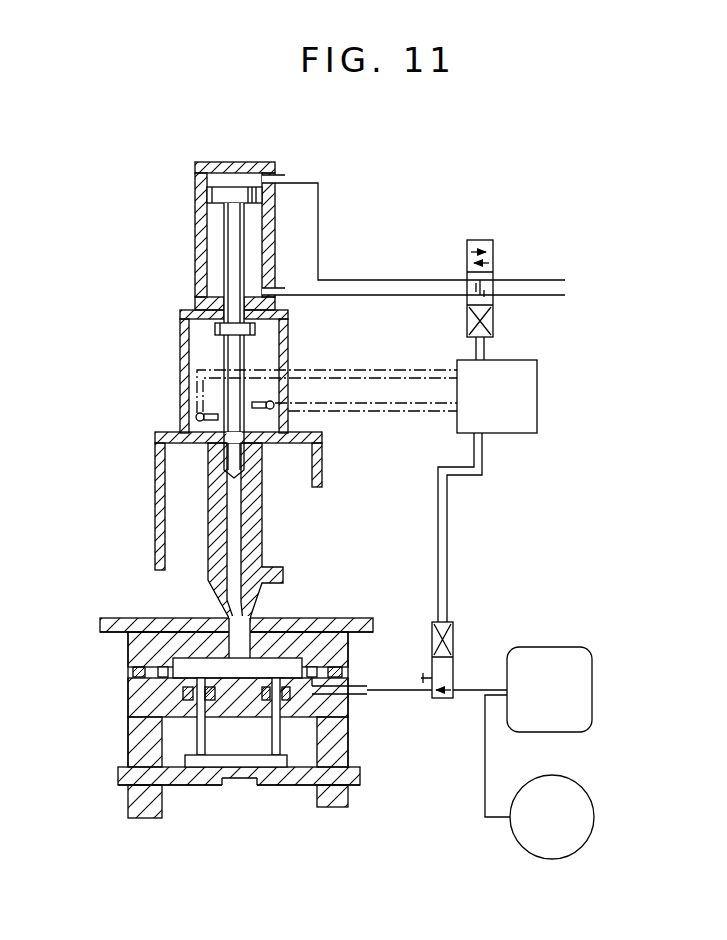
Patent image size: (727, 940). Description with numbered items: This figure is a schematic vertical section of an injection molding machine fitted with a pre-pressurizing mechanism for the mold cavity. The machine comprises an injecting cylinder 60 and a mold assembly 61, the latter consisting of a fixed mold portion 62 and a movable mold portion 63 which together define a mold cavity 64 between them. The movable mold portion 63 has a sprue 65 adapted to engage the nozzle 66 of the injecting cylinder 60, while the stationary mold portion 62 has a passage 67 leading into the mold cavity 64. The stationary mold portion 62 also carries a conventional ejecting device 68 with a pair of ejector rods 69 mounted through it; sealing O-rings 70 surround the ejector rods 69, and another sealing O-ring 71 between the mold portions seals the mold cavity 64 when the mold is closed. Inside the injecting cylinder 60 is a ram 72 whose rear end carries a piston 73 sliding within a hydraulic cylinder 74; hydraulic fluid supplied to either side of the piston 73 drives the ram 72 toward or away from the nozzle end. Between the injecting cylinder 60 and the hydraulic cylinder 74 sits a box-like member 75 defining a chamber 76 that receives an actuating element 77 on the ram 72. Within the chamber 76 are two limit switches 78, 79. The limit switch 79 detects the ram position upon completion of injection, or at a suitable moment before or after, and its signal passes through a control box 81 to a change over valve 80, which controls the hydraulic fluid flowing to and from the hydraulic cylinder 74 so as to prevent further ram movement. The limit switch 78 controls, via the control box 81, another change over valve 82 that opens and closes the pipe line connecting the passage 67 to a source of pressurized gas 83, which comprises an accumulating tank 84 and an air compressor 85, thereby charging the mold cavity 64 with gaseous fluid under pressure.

The injecting cylinder 60 is at (209, 470).
The mold assembly 61 is at (124, 659).
The fixed mold portion 62 is at (142, 706).
The movable mold portion 63 is at (150, 640).
The mold cavity 64 is at (288, 664).
The sprue 65 is at (238, 648).
The nozzle 66 is at (228, 622).
The passage 67 is at (347, 694).
The ejecting device 68 is at (243, 772).
The ejector rods 69 is at (202, 749).
The sealing O-rings 70 is at (190, 703).
The sealing O-ring 71 is at (345, 670).
The ram 72 is at (246, 359).
The piston 73 is at (222, 203).
The hydraulic cylinder 74 is at (268, 252).
The box-like member 75 is at (187, 372).
The chamber 76 is at (200, 327).
The actuating element 77 is at (255, 329).
The limit switch 78 is at (290, 412).
The limit switch 79 is at (196, 418).
The change over valve 80 is at (482, 240).
The control box 81 is at (538, 380).
The change over valve 82 is at (454, 650).
The source of pressurized gas 83 is at (599, 715).
The accumulating tank 84 is at (592, 652).
The air compressor 85 is at (593, 812).